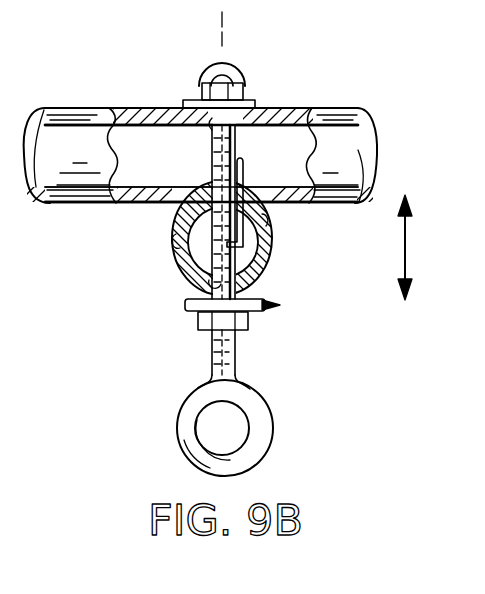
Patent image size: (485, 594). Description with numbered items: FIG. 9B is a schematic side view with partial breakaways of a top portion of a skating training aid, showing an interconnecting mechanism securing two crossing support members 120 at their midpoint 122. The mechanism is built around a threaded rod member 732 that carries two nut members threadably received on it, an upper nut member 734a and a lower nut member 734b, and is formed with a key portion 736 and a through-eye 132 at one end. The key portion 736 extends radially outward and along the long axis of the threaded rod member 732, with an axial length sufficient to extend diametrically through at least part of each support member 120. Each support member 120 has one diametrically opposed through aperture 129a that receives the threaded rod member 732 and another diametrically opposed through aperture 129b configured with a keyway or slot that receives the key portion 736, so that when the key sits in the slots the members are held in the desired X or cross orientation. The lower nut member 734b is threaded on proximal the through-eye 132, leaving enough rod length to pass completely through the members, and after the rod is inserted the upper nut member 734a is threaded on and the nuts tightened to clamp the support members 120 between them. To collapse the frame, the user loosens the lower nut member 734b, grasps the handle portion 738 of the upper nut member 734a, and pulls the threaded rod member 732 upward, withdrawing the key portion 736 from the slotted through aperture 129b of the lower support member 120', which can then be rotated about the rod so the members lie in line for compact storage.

The support member 120 is at (194, 129).
The lower support member 120' is at (222, 238).
The midpoint 122 is at (212, 34).
The handle portion 738 is at (230, 66).
The upper nut member 734a is at (251, 102).
The lower nut member 734b is at (272, 305).
The threaded rod member 732 is at (236, 366).
The key portion 736 is at (246, 170).
The through aperture 129a is at (210, 129).
The other through aperture 129b is at (181, 246).
The through-eye 132 is at (286, 431).